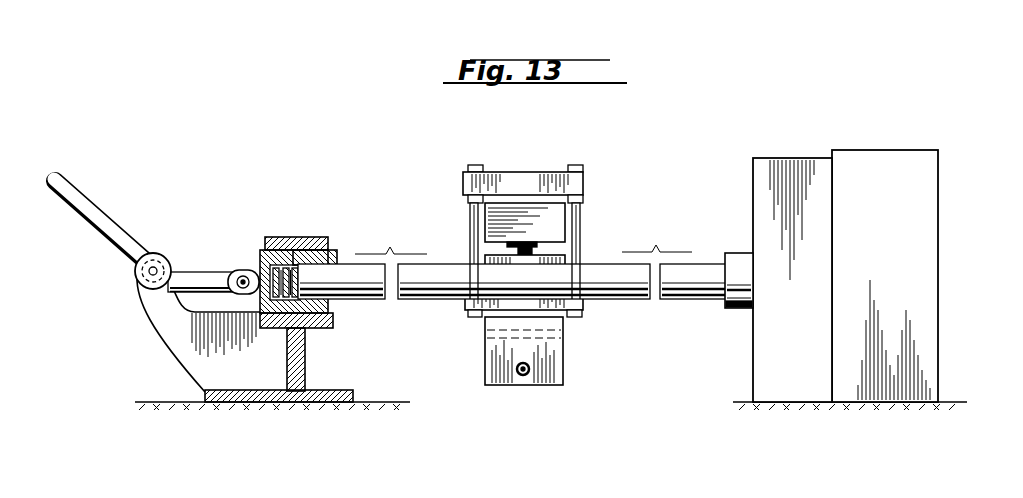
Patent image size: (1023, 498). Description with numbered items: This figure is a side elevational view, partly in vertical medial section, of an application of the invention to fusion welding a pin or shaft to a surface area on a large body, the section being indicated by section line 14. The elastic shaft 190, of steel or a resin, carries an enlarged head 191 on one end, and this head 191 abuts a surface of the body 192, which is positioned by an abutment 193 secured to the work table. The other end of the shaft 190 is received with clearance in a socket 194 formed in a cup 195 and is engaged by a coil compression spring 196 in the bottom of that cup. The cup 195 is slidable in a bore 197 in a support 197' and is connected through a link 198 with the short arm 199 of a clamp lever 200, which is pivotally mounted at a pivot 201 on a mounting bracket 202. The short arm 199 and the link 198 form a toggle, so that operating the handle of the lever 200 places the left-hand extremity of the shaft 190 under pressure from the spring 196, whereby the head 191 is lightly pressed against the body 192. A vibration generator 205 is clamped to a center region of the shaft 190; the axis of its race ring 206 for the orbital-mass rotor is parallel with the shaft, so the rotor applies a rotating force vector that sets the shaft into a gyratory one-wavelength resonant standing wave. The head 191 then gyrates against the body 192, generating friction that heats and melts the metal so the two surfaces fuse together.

The section line 14- 14 is at (525, 278).
The shaft 190 is at (627, 298).
The enlarged head 191 is at (735, 308).
The body 192 is at (752, 353).
The abutment 193 is at (938, 272).
The socket 194 is at (320, 255).
The cup 195 is at (262, 253).
The coil compression spring 196 is at (288, 265).
The bore 197 is at (325, 325).
The support 197' is at (295, 365).
The link 198 is at (217, 272).
The short arm 199 is at (168, 250).
The clamp lever 200 is at (108, 218).
The pivot 201 is at (150, 274).
The mounting bracket 202 is at (157, 330).
The vibration generator 205 is at (565, 377).
The race ring for the orbital-mass rotor 206 is at (497, 338).